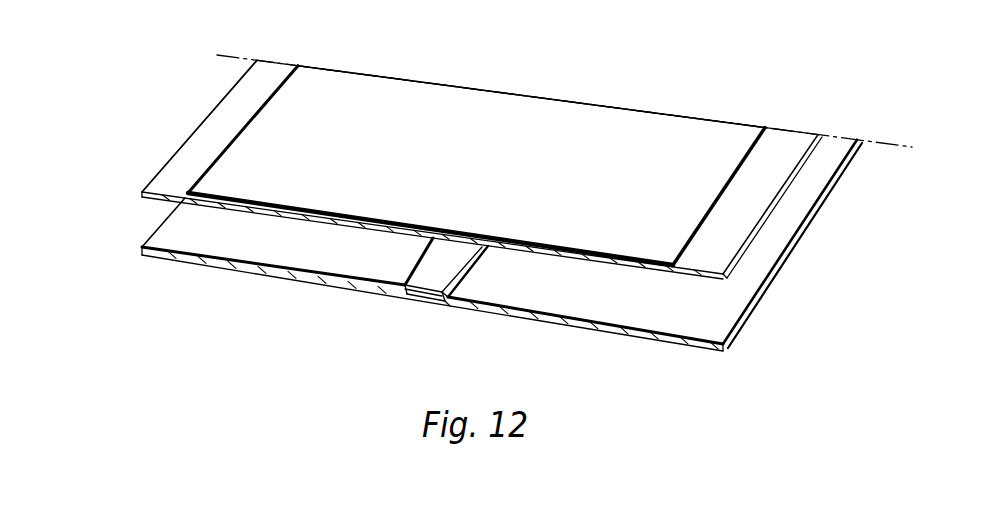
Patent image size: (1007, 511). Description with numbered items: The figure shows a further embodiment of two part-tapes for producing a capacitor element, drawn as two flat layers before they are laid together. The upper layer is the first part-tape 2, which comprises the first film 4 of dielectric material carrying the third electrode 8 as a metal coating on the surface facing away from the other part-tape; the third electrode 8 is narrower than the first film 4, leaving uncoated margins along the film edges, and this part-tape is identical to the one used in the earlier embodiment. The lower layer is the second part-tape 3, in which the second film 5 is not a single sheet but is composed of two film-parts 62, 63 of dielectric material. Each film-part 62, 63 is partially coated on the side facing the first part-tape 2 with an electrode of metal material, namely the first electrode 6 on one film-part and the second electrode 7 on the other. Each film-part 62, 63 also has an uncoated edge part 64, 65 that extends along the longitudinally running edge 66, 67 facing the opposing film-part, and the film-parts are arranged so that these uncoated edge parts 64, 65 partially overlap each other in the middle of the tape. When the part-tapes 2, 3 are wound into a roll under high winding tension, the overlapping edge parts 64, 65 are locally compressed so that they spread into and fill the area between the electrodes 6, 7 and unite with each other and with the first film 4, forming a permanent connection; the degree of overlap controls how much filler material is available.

The first part-tape 2 is at (170, 107).
The second part-tape 3 is at (798, 287).
The first film 4 is at (140, 192).
The second film 5 is at (126, 258).
The first electrode 6 is at (282, 251).
The second electrode 7 is at (602, 301).
The third electrode 8 is at (491, 177).
The film-part 62 is at (287, 275).
The film-part 63 is at (687, 338).
The uncoated edge part 64 is at (457, 276).
The uncoated edge part 65 is at (427, 303).
The longitudinally running edge 66 is at (448, 308).
The longitudinally running edge 67 is at (408, 298).